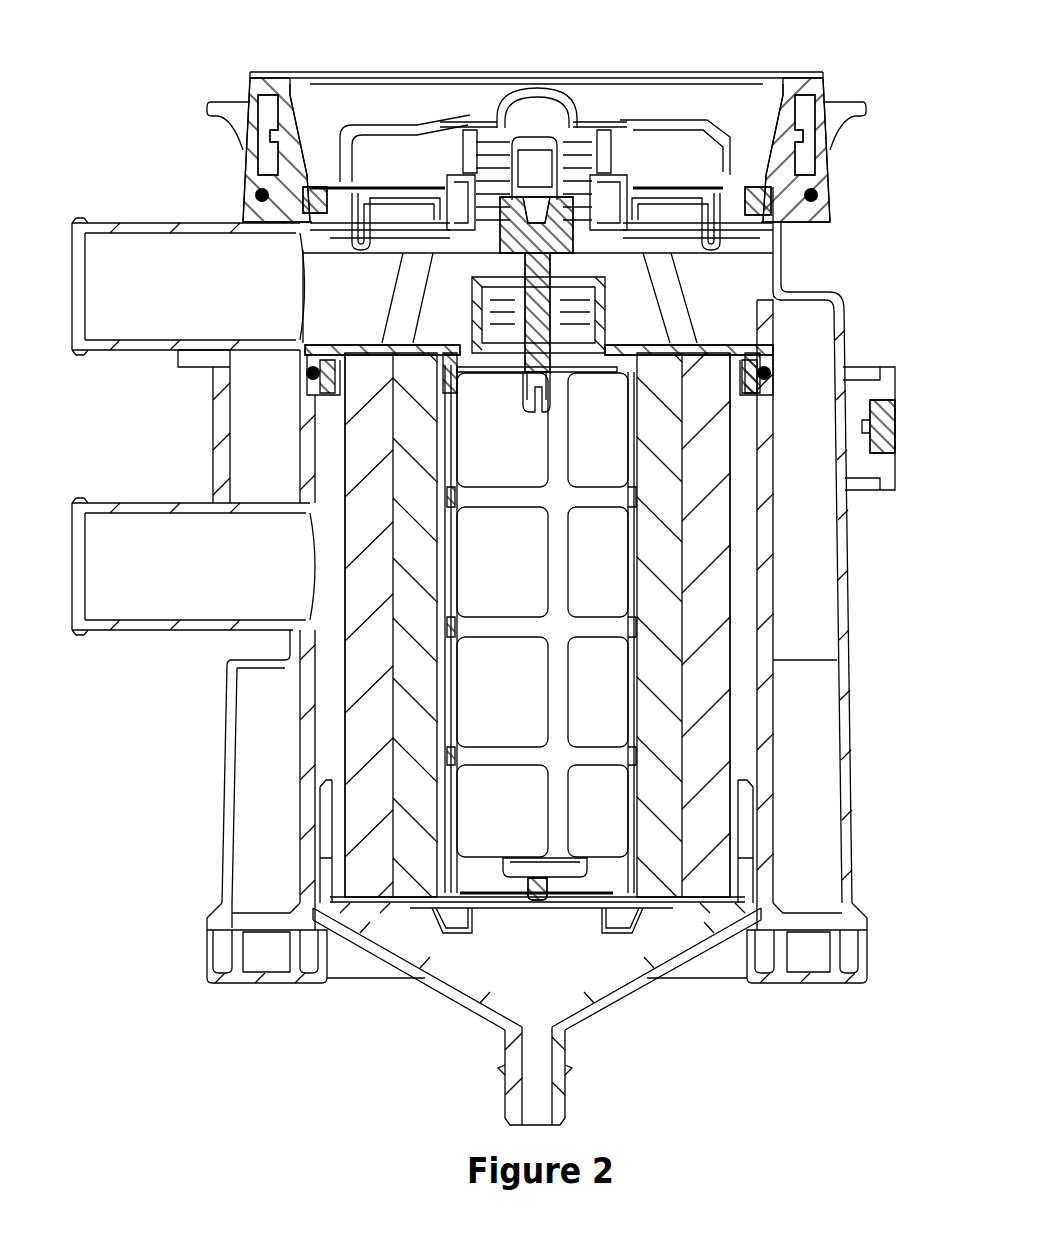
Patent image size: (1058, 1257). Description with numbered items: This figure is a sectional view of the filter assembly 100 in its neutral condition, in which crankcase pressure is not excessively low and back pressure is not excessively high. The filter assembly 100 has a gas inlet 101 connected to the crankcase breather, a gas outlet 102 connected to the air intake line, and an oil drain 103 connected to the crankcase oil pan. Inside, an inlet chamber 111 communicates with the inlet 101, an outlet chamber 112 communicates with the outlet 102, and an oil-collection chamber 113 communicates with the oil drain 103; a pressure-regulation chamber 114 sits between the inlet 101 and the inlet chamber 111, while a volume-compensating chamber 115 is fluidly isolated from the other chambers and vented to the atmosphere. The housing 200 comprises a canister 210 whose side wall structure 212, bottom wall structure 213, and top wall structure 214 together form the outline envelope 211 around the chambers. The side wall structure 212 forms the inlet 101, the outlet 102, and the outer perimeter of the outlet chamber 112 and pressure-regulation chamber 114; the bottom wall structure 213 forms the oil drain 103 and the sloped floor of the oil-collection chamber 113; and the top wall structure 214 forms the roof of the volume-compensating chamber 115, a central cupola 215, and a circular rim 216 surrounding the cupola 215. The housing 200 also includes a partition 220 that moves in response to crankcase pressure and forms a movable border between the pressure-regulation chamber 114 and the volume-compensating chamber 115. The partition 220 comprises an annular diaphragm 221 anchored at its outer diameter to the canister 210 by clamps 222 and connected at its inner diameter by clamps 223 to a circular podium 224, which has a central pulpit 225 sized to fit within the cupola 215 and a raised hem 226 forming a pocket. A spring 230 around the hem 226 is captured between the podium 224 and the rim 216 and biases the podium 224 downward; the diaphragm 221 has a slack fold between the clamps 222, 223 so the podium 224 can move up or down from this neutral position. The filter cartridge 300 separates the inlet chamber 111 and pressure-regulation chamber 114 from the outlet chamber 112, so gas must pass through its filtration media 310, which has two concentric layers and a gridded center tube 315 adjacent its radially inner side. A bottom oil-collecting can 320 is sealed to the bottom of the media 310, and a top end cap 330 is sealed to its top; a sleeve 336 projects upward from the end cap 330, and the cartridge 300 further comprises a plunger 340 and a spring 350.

The filter assembly 100 is at (160, 74).
The gas inlet 101 is at (169, 313).
The gas outlet 102 is at (169, 585).
The oil drain 103 is at (538, 1090).
The inlet chamber 111 is at (629, 578).
The outlet chamber 112 is at (327, 460).
The oil-collection chamber 113 is at (552, 993).
The pressure-regulation chamber 114 is at (659, 335).
The volume-compensating chamber 115 is at (427, 168).
The housing 200 is at (900, 590).
The canister 210 is at (905, 733).
The outline envelope 211 is at (851, 822).
The side wall structure 212 is at (893, 673).
The bottom wall structure 213 is at (395, 957).
The top wall structure 214 is at (322, 125).
The central cupola 215 is at (547, 90).
The circular rim 216 is at (482, 210).
The partition 220 is at (762, 218).
The annular diaphragm 221 is at (727, 255).
The clamps 222 is at (290, 218).
The clamps 223 is at (657, 180).
The circular podium 224 is at (433, 238).
The central pulpit 225 is at (542, 140).
The raised hem 226 is at (592, 202).
The spring 230 is at (503, 185).
The filter cartridge 300 is at (340, 644).
The filtration media 310 is at (371, 548).
The gridded center tube 315 is at (510, 627).
The bottom oil-collecting can 320 is at (397, 920).
The top end cap 330 is at (331, 346).
The sleeve 336 is at (476, 308).
The plunger 340 is at (537, 375).
The spring 350 is at (465, 235).